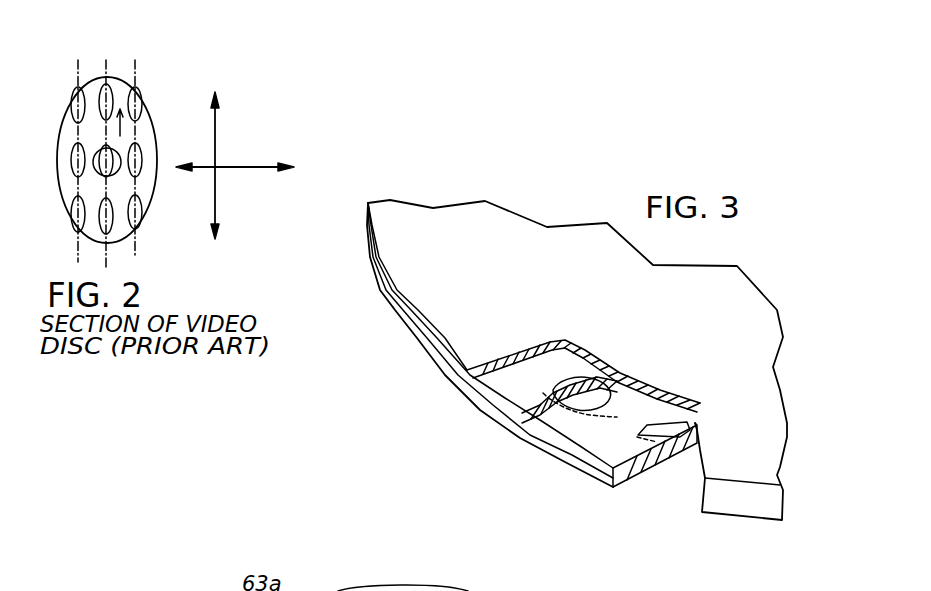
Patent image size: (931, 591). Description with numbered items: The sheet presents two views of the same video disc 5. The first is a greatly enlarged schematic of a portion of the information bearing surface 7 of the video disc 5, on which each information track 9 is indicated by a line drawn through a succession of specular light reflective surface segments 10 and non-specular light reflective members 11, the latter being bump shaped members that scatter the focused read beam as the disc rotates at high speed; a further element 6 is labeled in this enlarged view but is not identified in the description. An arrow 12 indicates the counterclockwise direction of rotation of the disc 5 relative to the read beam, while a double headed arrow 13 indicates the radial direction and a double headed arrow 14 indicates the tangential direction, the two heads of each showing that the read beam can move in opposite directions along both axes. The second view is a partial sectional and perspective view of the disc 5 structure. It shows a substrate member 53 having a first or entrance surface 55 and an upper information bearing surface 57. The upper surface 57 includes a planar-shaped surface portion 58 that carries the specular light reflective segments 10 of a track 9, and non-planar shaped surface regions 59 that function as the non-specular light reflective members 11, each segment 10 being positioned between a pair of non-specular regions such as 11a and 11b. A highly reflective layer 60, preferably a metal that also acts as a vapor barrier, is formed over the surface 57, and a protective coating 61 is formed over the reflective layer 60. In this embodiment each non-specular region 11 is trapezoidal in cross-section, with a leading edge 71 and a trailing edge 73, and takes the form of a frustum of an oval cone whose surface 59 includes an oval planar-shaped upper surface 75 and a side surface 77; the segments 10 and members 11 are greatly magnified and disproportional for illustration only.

In FIG. 3, the video disc 5 is at (410, 372).
In FIG. 2, the pit 6 is at (97, 165).
In FIG. 2, the information bearing surface 7 is at (63, 137).
In FIG. 2, the information track 9 is at (88, 67).
In FIG. 2, the specular light reflective surface segment 10 is at (139, 193).
In FIG. 3, the specular light reflective surface segment 10 is at (630, 420).
In FIG. 2, the non-specular light reflective member 11 is at (137, 164).
In FIG. 3, the non-specular light reflective region 11a is at (614, 400).
In FIG. 3, the non-specular light reflective region 11b is at (695, 407).
In FIG. 2, the arrow 12 is at (131, 126).
In FIG. 3, the arrow 12 is at (432, 398).
In FIG. 2, the double headed arrow 13 is at (285, 129).
In FIG. 2, the double headed arrow 14 is at (245, 80).
In FIG. 3, the substrate member 53 is at (405, 345).
In FIG. 3, the entrance surface 55 is at (645, 473).
In FIG. 3, the information bearing surface 57 is at (604, 487).
In FIG. 3, the planar-shaped surface portion 58 is at (587, 452).
In FIG. 3, the non-planar shaped surface region 59 is at (565, 412).
In FIG. 3, the highly reflective layer 60 is at (457, 395).
In FIG. 3, the protective coating 61 is at (443, 355).
In FIG. 3, the leading edge 71 is at (553, 392).
In FIG. 3, the trailing edge 73 is at (620, 412).
In FIG. 3, the planar-shaped upper surface 75 is at (583, 388).
In FIG. 3, the side surface 77 is at (582, 408).